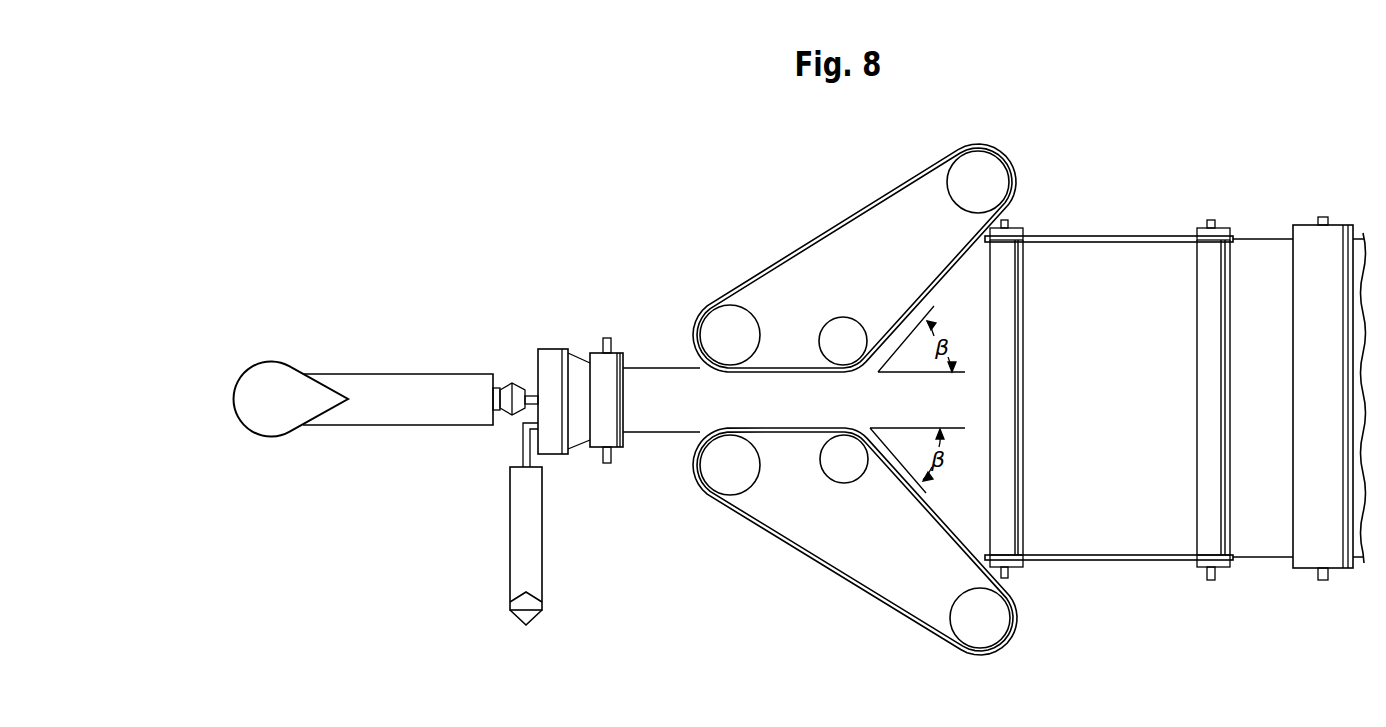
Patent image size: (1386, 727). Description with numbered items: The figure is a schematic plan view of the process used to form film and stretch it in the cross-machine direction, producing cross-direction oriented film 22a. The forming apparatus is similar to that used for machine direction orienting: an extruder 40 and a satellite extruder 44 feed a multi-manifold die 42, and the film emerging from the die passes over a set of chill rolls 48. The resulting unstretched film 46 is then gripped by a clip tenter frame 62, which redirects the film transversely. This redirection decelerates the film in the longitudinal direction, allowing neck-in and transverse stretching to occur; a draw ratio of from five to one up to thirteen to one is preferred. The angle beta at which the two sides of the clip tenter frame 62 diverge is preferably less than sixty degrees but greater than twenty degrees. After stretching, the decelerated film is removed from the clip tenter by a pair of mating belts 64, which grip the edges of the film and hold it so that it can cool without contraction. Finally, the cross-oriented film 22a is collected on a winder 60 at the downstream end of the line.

The cross-direction oriented film 22a is at (1135, 389).
The extruder 40 is at (407, 383).
The multi-manifold die 42 is at (576, 368).
The satellite extruder 44 is at (520, 556).
The unstretched film 46 is at (665, 387).
The chill rolls 48 is at (607, 430).
The winder 60 is at (1312, 553).
The clip tenter frame 62 is at (800, 243).
The mating belts 64 is at (1127, 236).